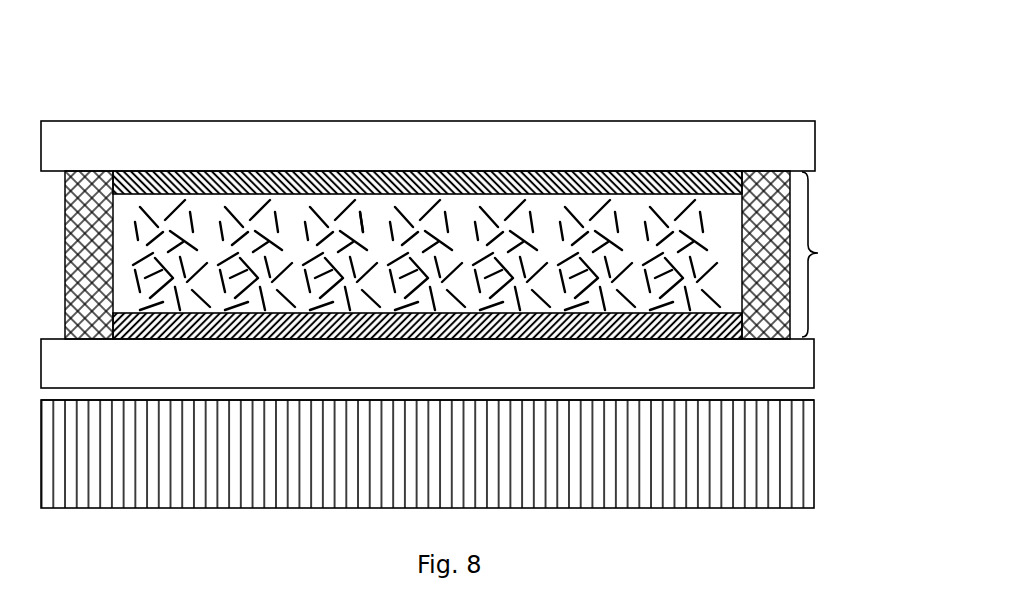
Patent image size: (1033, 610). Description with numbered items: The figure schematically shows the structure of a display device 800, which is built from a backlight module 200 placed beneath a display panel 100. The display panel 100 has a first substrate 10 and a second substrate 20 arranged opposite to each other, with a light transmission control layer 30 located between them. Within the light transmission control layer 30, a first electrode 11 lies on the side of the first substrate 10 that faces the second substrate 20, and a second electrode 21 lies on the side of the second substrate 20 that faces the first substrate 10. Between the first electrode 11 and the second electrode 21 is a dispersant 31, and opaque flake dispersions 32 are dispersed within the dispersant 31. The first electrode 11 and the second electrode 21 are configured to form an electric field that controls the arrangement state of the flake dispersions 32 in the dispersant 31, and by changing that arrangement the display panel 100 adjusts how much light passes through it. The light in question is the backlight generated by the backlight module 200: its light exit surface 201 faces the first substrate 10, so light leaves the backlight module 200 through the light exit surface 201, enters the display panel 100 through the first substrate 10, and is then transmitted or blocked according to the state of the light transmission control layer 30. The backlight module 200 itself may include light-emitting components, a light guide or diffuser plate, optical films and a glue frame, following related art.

The display device 800 is at (100, 69).
The display panel 100 is at (44, 291).
The second substrate 20 is at (790, 147).
The second electrode 21 is at (790, 183).
The light transmission control layer 30 is at (492, 195).
The dispersant 31 is at (457, 203).
The flake dispersion 32 is at (358, 217).
The first electrode 11 is at (790, 328).
The first substrate 10 is at (790, 363).
The backlight module 200 is at (790, 450).
The light exit surface 201 is at (663, 400).